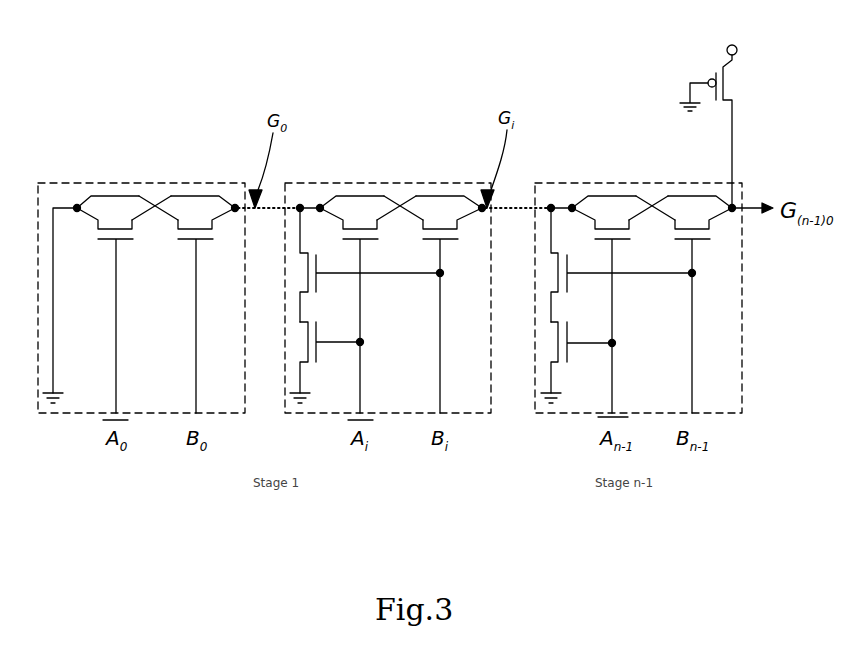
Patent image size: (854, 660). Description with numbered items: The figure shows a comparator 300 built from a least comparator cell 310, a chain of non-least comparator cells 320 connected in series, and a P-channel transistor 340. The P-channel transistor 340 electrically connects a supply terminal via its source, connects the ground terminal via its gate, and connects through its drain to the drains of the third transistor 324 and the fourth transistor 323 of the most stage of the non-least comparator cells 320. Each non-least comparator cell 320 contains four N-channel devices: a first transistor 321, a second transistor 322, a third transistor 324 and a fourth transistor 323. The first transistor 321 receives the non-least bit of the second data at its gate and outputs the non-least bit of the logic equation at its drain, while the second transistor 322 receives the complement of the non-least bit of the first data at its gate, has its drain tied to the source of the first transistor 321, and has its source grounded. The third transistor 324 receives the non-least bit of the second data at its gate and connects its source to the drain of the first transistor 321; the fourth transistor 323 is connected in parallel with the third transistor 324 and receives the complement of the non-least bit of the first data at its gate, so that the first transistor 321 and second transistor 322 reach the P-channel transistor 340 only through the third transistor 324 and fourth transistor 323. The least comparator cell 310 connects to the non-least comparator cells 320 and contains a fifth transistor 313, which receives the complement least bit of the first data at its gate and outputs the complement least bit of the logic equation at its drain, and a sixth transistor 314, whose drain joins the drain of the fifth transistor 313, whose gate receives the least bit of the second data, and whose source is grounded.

The comparator 300 is at (48, 141).
The least comparator cell 310 is at (193, 183).
The non-least comparator cell 320 is at (425, 183).
The fifth transistor 313 is at (123, 240).
The sixth transistor 314 is at (200, 240).
The first transistor 321 is at (301, 272).
The second transistor 322 is at (302, 340).
The fourth transistor 323 is at (364, 240).
The third transistor 324 is at (444, 240).
The P-channel transistor 340 is at (717, 66).